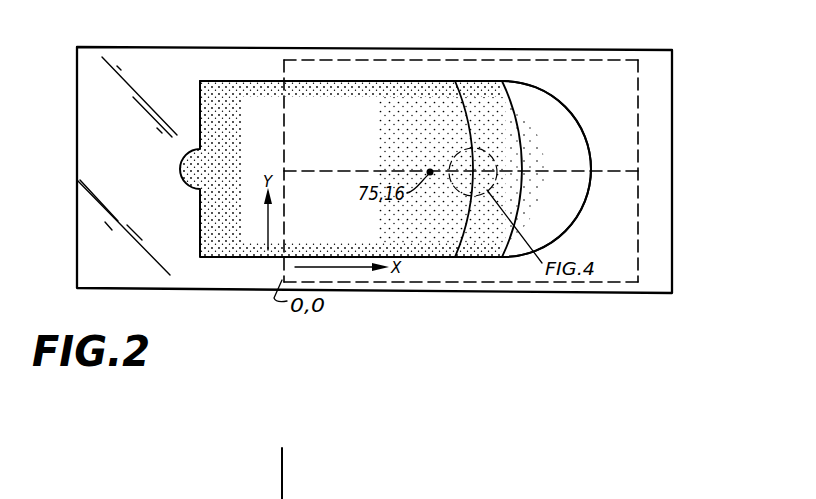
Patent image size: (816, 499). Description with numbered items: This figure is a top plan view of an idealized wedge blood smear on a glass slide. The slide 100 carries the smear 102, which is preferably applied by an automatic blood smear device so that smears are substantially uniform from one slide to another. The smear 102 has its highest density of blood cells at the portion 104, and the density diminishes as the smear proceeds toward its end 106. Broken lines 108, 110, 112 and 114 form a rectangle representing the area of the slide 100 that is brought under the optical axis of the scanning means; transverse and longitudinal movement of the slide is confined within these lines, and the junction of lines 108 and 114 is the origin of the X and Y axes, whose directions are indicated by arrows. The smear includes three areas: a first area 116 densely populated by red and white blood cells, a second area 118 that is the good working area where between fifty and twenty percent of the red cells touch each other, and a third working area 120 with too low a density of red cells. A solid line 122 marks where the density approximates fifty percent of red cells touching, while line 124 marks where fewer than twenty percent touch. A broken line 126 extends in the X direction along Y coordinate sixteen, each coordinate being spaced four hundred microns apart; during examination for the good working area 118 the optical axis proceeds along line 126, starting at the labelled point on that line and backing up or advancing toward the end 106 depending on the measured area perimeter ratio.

The slide 100 is at (657, 286).
The smear 102 is at (227, 257).
The portion of the blood smear 104 is at (222, 80).
The end of the blood smear 106 is at (592, 161).
The broken line 108 is at (430, 283).
The broken line 110 is at (638, 239).
The broken line 112 is at (539, 60).
The broken line 114 is at (284, 148).
The first area 116 is at (355, 144).
The second area 118 is at (503, 125).
The third working area 120 is at (568, 153).
The solid line 122 is at (457, 106).
The line 124 is at (517, 112).
The broken line 126 is at (341, 172).